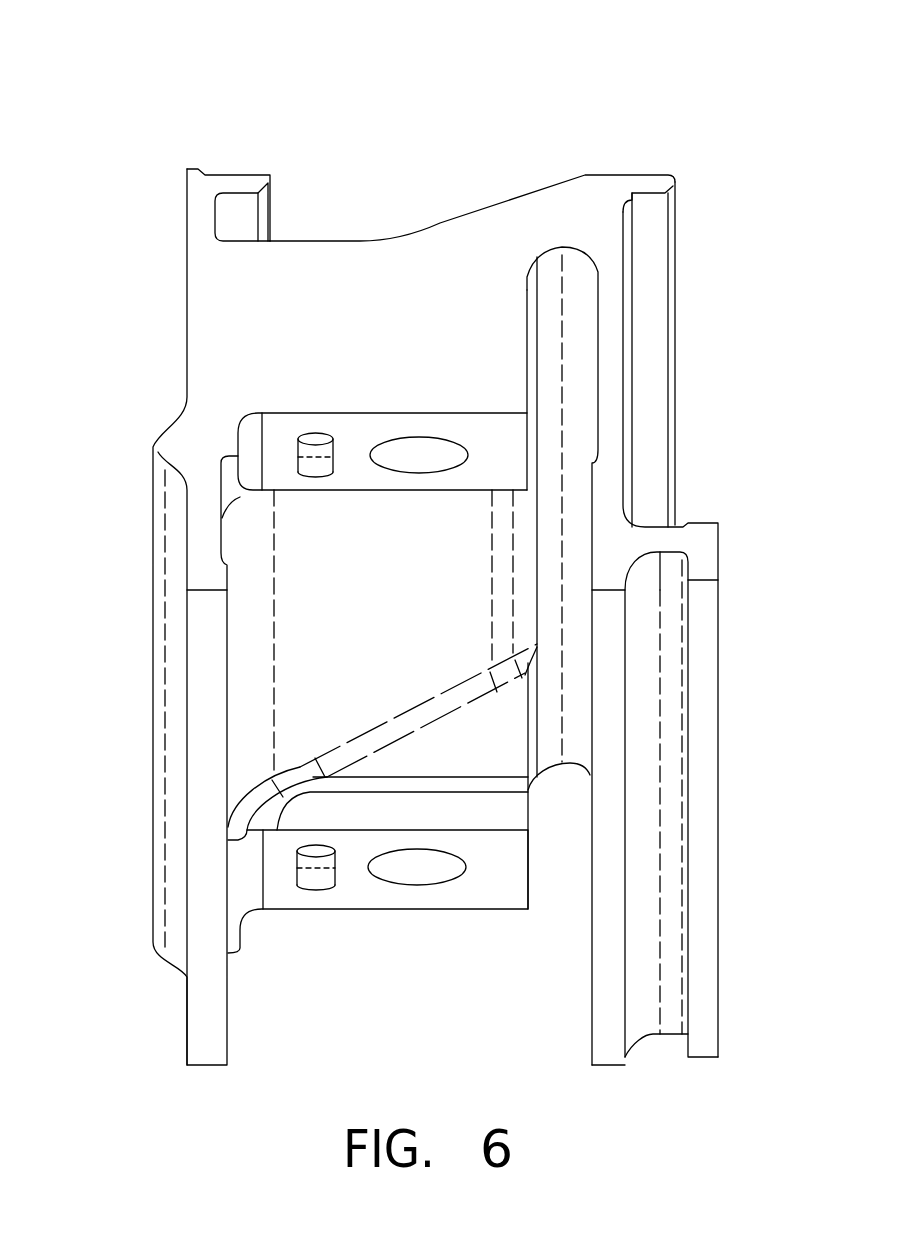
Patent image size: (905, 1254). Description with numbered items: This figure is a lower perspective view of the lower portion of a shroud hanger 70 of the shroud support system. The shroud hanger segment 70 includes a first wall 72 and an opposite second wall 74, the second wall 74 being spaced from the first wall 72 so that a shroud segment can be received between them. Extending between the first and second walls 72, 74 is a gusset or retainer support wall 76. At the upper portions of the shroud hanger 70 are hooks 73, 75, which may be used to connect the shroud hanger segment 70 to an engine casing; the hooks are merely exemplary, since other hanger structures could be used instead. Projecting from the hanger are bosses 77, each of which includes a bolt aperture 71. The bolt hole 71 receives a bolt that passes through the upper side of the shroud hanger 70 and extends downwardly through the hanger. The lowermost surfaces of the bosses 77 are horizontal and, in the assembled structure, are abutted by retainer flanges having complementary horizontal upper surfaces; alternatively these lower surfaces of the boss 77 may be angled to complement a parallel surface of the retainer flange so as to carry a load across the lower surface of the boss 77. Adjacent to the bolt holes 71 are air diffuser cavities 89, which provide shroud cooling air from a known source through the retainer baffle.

The shroud hanger 70 is at (727, 80).
The bolt aperture 71 is at (392, 465).
The first wall 72 is at (153, 610).
The hook 73 is at (235, 170).
The second wall 74 is at (623, 403).
The hook 75 is at (650, 175).
The gusset or retainer support wall 76 is at (435, 224).
The boss 77 is at (480, 900).
The air diffuser cavity 89 is at (322, 457).